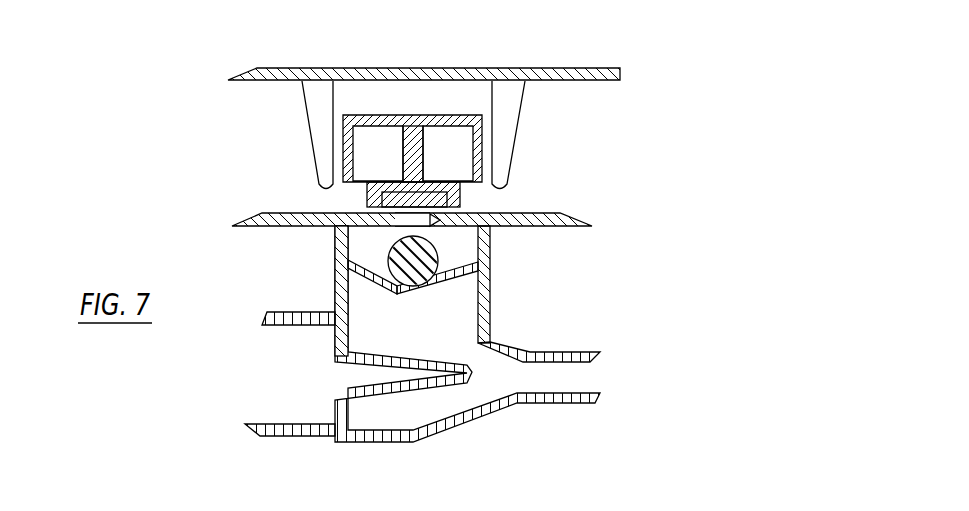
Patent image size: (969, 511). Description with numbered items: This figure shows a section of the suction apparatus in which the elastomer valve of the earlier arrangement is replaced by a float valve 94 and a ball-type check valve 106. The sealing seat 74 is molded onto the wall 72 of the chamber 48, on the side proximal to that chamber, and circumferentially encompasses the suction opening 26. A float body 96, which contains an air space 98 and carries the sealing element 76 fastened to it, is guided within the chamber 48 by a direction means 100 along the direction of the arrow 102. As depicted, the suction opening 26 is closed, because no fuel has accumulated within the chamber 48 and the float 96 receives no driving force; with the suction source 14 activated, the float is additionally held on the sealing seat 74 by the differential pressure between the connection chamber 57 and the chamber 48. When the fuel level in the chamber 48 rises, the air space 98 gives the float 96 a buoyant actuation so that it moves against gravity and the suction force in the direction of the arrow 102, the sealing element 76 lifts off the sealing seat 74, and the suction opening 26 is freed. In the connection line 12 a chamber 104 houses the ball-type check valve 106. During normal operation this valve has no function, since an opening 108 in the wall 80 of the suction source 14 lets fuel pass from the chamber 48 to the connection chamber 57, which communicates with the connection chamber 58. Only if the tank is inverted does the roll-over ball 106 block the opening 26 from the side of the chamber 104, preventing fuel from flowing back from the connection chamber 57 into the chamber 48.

The connection line 12 is at (429, 305).
The suction source 14 is at (464, 433).
The suction opening 26 is at (410, 220).
The chamber 48 is at (435, 119).
The connection chamber 57 is at (425, 344).
The connection chamber 58 is at (362, 375).
The wall 72 is at (422, 143).
The sealing seat 74 is at (397, 220).
The sealing element 76 is at (358, 119).
The wall 80 is at (477, 224).
The float valve 94 is at (217, 200).
The float body 96 is at (407, 122).
The air space 98 is at (433, 100).
The direction means 100 is at (317, 92).
The arrow 102 is at (412, 453).
The chamber 104 is at (373, 257).
The ball-type check valve 106 is at (378, 278).
The opening 108 is at (400, 289).